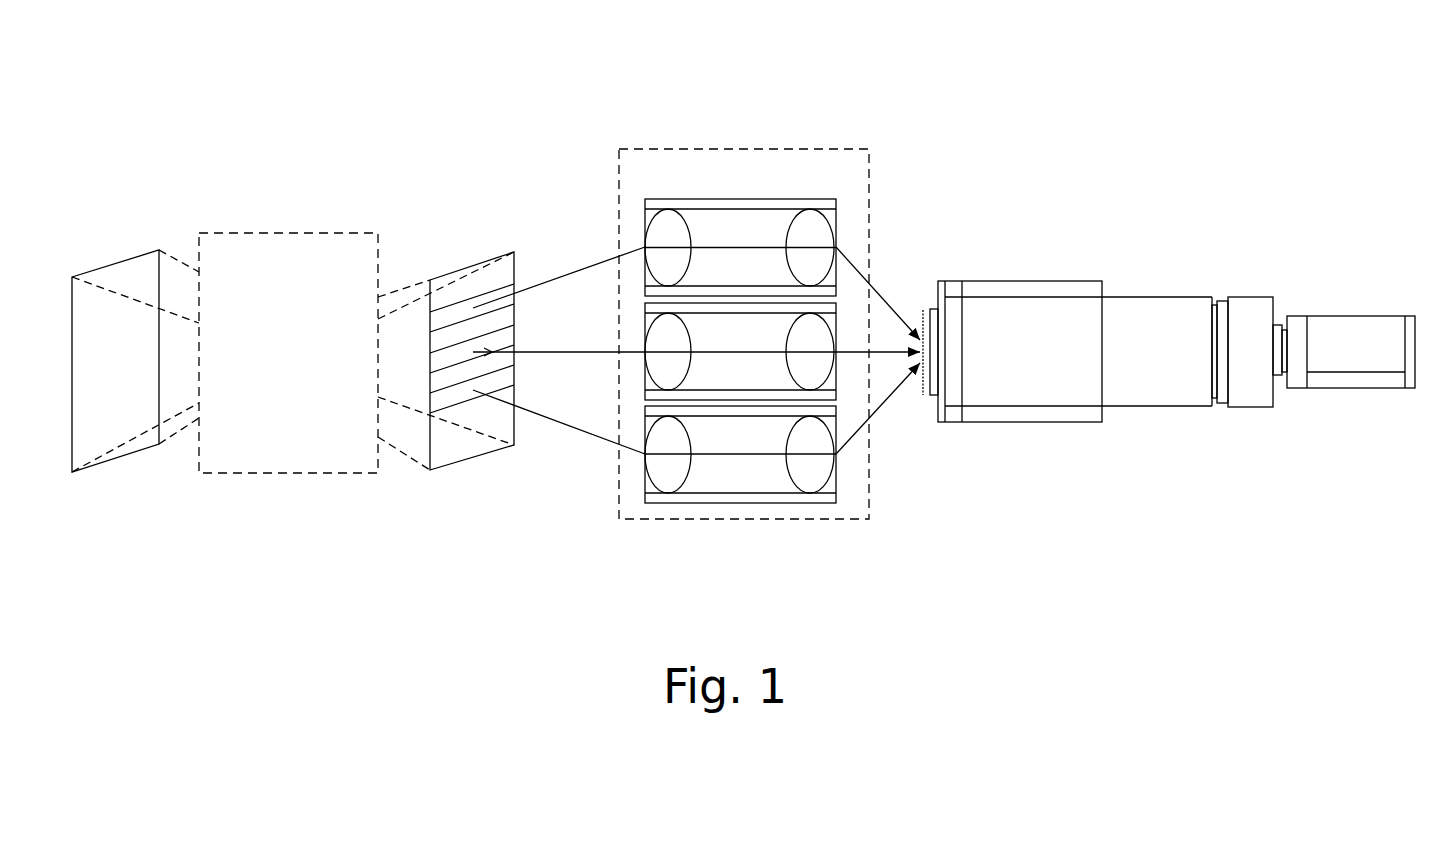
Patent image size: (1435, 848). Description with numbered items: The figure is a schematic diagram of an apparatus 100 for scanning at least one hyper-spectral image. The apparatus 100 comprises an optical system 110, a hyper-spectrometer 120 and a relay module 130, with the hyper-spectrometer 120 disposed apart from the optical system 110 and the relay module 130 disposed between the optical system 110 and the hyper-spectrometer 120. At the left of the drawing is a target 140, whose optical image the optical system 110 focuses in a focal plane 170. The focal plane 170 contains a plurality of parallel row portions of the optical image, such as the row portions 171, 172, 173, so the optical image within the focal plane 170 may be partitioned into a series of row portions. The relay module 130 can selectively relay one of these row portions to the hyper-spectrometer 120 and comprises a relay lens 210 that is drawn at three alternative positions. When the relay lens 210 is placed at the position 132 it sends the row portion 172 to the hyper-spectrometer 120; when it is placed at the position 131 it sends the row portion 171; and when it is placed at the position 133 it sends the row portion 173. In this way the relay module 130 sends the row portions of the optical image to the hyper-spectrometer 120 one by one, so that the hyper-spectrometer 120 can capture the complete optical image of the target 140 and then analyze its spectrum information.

The apparatus 100 is at (247, 48).
The optical system 110 is at (290, 232).
The hyper-spectrometer 120 is at (1157, 297).
The relay module 130 is at (752, 149).
The position 131 is at (842, 232).
The position 132 is at (842, 333).
The position 133 is at (842, 480).
The target 140 is at (113, 262).
The focal plane 170 is at (458, 263).
The row portion 171 is at (518, 300).
The row portion 172 is at (521, 341).
The row portion 173 is at (518, 380).
The relay lens 210 is at (762, 343).